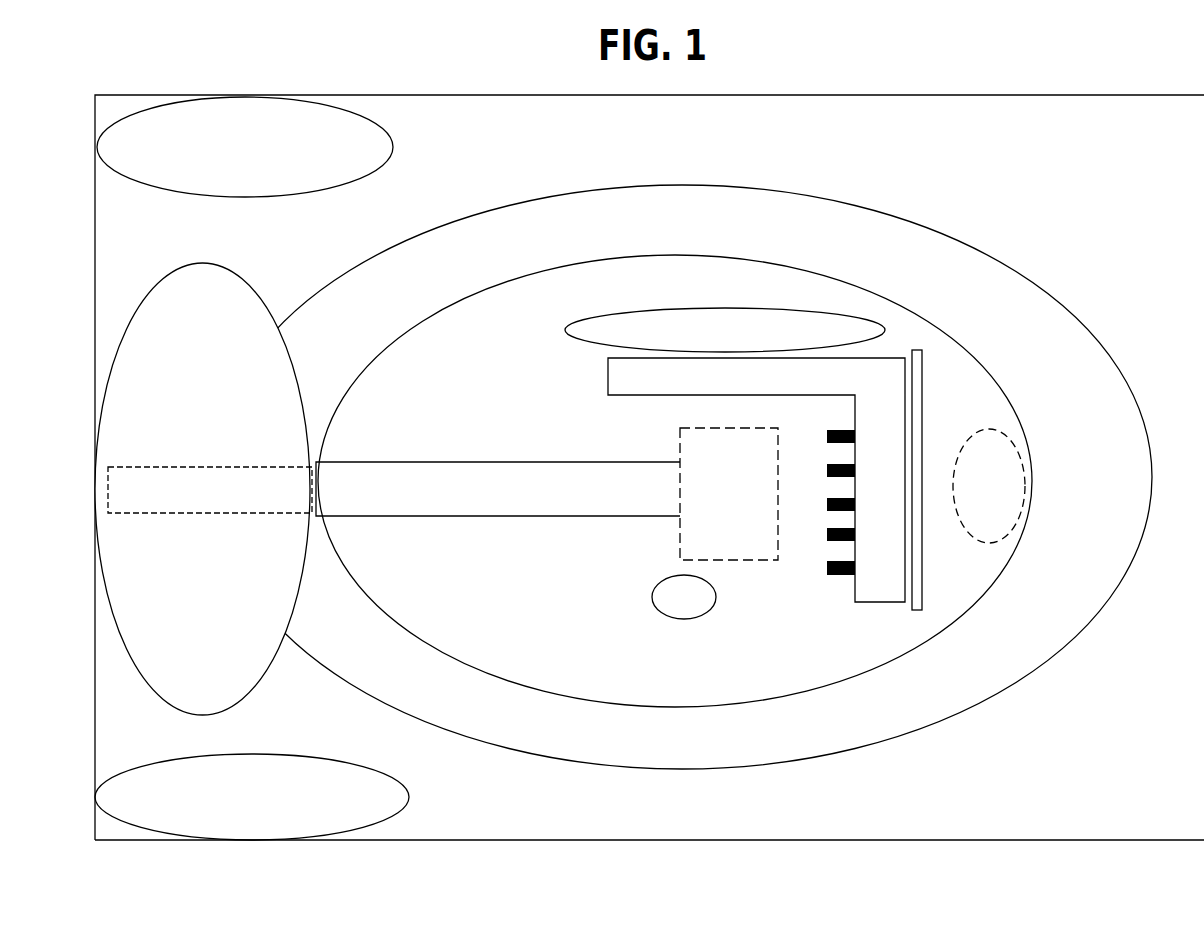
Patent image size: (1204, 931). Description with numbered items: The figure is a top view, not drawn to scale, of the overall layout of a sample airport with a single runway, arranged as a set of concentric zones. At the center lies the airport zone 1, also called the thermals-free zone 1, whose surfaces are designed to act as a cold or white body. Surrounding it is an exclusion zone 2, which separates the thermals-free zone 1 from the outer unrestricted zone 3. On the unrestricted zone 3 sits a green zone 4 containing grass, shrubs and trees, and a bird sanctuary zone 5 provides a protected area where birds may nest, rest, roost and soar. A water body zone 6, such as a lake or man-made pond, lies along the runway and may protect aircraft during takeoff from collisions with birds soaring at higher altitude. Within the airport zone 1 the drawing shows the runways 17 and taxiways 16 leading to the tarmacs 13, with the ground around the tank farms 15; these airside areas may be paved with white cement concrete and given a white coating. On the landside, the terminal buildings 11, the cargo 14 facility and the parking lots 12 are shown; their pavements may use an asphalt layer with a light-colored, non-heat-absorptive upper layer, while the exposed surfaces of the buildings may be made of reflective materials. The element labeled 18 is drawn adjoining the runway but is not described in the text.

The airport zone 1 is at (955, 390).
The exclusion zone 2 is at (985, 660).
The unrestricted zone 3 is at (1183, 158).
The green zone 4 is at (372, 160).
The bird sanctuary zone 5 is at (367, 810).
The water body zone 6 is at (210, 307).
The terminal buildings 11 is at (878, 360).
The parking lots 12 is at (990, 465).
The tarmacs 13 is at (835, 576).
The cargo 14 is at (758, 315).
The tank farms 15 is at (665, 621).
The taxiways 16 is at (760, 540).
The runways 17 is at (500, 478).
The shaft extension 18 is at (185, 493).